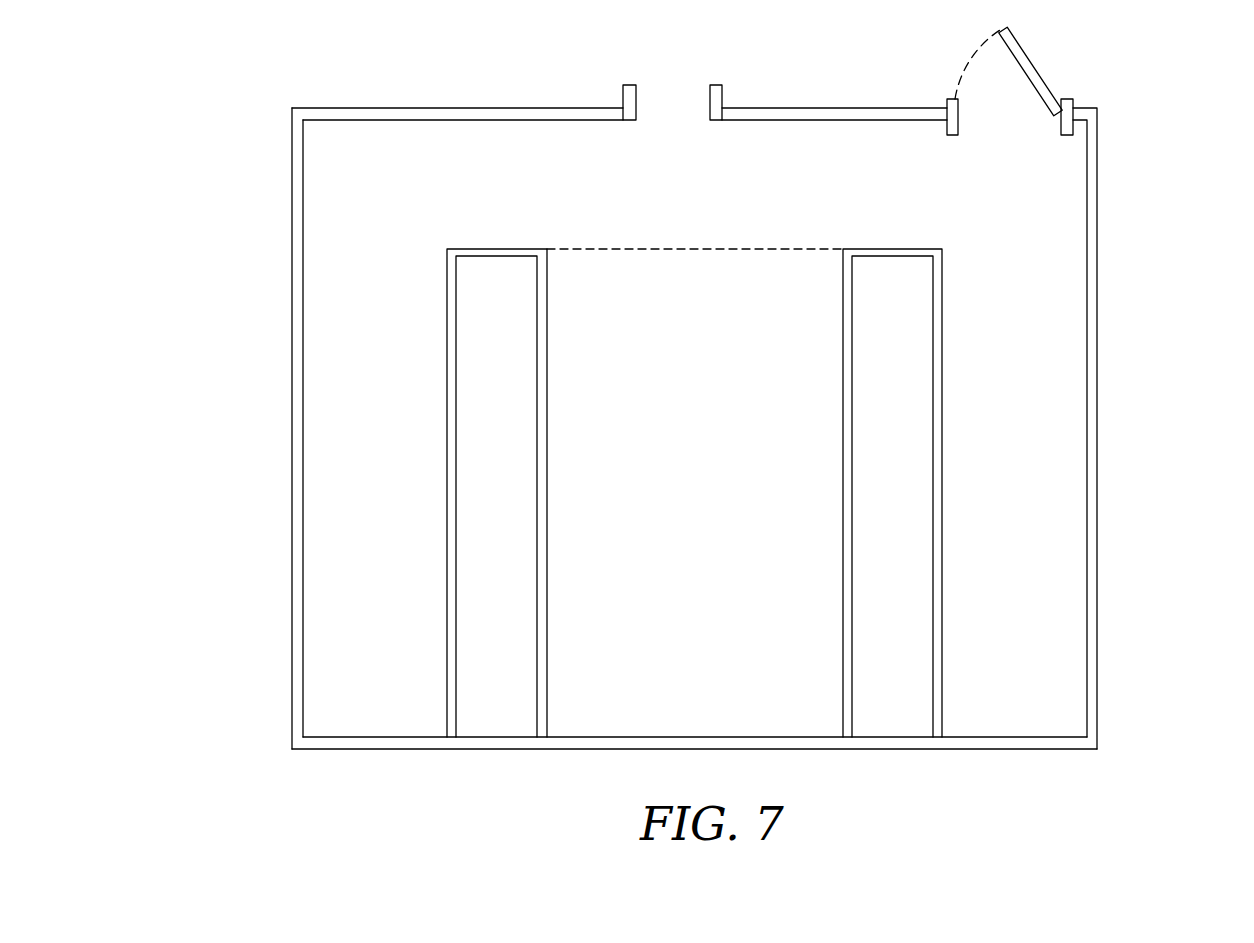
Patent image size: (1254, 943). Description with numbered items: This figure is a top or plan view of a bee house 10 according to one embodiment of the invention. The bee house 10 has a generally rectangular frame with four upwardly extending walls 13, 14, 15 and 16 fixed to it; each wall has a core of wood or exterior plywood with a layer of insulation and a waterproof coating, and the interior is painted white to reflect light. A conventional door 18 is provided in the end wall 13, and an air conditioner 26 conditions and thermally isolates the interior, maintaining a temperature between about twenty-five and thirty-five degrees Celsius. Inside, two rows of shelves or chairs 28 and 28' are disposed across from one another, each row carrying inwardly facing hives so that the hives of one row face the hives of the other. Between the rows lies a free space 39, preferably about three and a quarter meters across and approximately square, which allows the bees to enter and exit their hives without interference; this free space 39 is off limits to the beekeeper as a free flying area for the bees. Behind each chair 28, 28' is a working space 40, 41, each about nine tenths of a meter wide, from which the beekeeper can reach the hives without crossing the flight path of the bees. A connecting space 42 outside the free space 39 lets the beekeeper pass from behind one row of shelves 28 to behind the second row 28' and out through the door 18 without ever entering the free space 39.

The bee house 10 is at (1160, 99).
The end wall 13 is at (442, 108).
The wall 14 is at (1098, 367).
The wall 15 is at (708, 736).
The wall 16 is at (292, 353).
The door 18 is at (1036, 68).
The air conditioner 26 is at (690, 86).
The shelves or chairs 28 is at (497, 526).
The shelves or chairs 28' is at (892, 526).
The free space 39 is at (690, 423).
The working space 40 is at (396, 468).
The working space 41 is at (1036, 464).
The connecting space 42 is at (690, 214).